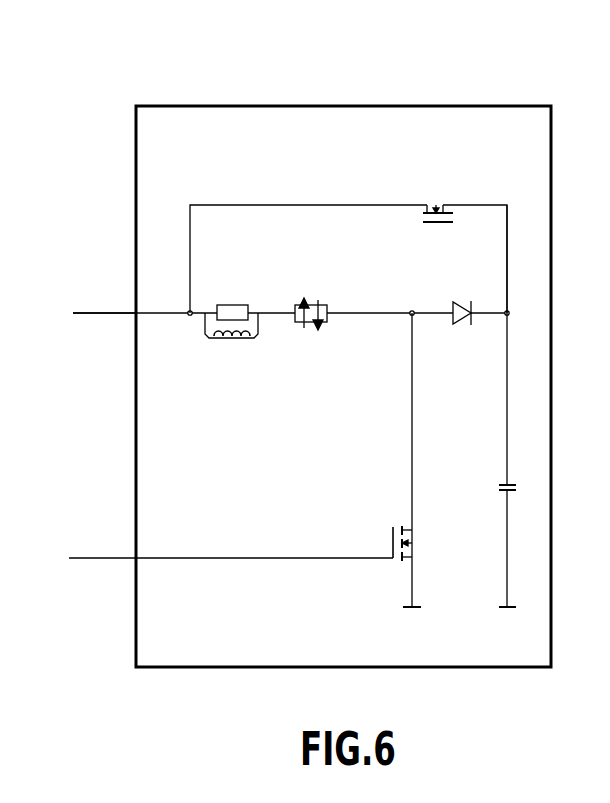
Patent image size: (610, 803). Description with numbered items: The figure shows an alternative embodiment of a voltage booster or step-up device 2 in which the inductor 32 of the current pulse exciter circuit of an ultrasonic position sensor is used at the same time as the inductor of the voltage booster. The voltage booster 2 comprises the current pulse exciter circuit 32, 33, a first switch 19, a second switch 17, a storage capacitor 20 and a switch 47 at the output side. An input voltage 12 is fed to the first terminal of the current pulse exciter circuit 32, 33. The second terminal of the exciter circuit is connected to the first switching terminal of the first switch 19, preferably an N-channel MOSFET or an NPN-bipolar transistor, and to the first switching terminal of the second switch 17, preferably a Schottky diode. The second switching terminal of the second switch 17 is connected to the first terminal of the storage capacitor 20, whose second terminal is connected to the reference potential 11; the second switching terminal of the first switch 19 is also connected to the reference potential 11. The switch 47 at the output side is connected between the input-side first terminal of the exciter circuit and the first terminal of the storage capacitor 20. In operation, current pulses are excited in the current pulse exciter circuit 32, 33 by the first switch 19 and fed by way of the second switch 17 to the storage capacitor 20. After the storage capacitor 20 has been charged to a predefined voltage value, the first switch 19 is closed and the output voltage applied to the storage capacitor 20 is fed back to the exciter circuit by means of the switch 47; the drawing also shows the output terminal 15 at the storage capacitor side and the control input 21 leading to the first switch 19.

The voltage booster 2 is at (253, 105).
The reference potential 11 is at (403, 607).
The input voltage 12 is at (97, 310).
The output terminal 15 is at (513, 312).
The second switch 17 is at (457, 325).
The first switch 19 is at (393, 527).
The storage capacitor 20 is at (499, 488).
The control input 21 is at (240, 560).
The inductor 32 is at (232, 303).
The current pulse exciter circuit element 33 is at (310, 300).
The switch at the output side 47 is at (432, 203).